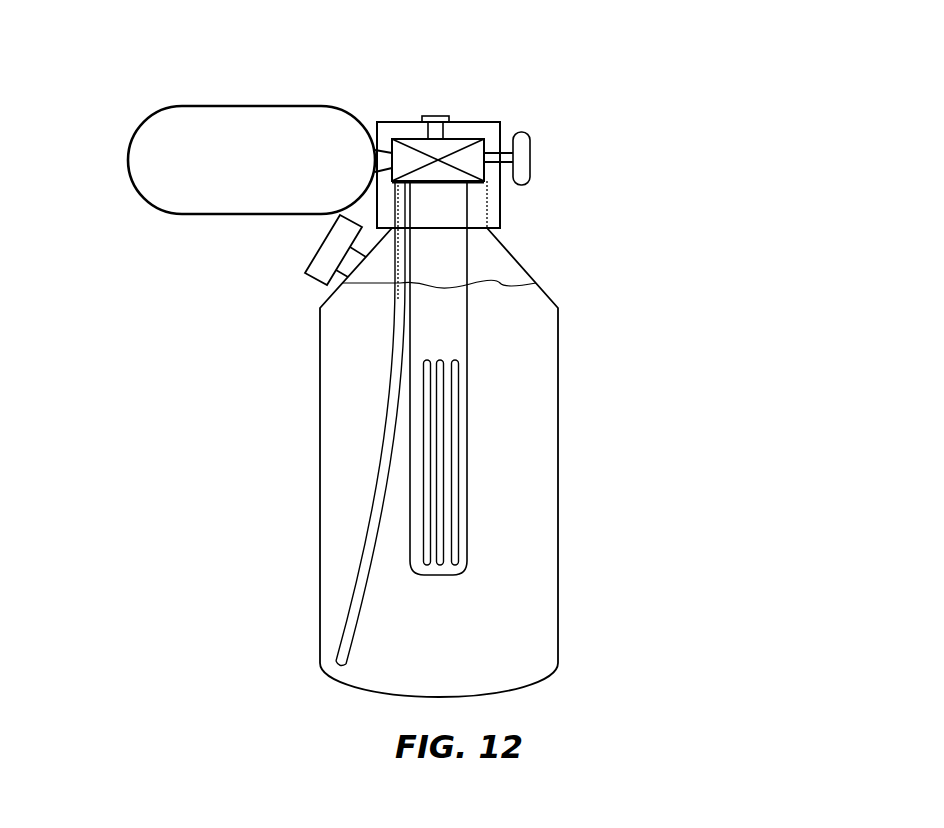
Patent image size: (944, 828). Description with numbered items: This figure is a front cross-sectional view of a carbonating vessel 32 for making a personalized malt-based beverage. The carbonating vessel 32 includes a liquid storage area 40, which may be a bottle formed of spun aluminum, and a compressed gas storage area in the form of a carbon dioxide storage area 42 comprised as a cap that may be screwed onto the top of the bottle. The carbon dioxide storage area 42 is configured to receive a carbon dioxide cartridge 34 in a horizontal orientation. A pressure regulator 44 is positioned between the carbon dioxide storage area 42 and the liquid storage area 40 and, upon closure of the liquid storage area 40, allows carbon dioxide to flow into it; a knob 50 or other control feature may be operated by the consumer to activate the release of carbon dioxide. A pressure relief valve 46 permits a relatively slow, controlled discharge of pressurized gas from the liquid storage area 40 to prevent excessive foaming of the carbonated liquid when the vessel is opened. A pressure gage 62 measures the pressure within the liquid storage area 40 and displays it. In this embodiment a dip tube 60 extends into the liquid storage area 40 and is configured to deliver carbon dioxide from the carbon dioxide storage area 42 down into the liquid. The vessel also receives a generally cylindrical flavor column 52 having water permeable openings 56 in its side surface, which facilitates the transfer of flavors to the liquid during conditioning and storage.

The carbonating vessel 32 is at (74, 88).
The carbon dioxide cartridge 34 is at (210, 208).
The liquid storage area 40 is at (300, 555).
The carbon dioxide storage area 42 is at (542, 124).
The pressure regulator 44 is at (408, 150).
The pressure relief valve 46 is at (438, 131).
The knob 50 is at (518, 161).
The flavor column 52 is at (453, 331).
The water permeable openings 56 is at (455, 445).
The dip tube 60 is at (385, 452).
The pressure gage 62 is at (313, 267).